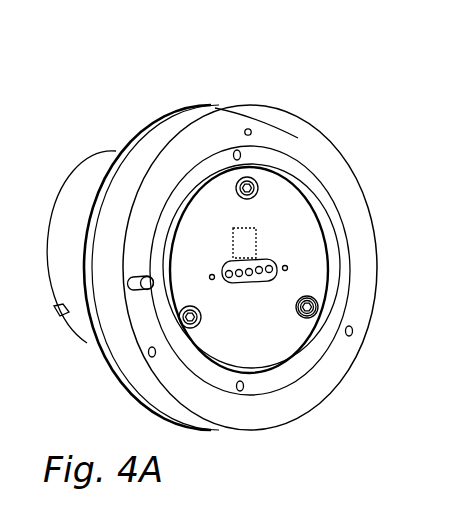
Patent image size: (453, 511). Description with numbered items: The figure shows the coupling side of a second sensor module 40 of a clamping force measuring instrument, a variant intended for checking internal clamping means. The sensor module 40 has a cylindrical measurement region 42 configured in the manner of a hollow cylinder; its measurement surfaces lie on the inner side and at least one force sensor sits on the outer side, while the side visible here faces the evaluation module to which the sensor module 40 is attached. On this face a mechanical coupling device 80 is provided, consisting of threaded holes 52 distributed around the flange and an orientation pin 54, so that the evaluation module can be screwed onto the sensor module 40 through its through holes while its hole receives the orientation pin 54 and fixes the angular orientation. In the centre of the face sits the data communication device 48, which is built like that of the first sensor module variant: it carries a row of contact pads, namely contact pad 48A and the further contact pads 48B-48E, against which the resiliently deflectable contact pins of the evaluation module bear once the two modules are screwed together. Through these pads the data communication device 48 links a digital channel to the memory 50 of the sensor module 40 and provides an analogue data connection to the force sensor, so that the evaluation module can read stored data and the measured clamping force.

The sensor module 40 is at (291, 95).
The cylindrical measurement region 42 is at (55, 256).
The data communication device 48 is at (214, 317).
The contact pad 48A is at (277, 270).
The contact pads 48B-48E is at (238, 274).
The memory 50 is at (247, 250).
The threaded holes 52 is at (251, 131).
The orientation pin 54 is at (137, 286).
The coupling device 80 is at (235, 133).